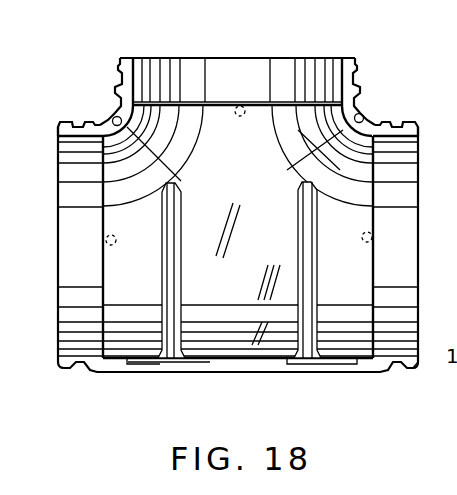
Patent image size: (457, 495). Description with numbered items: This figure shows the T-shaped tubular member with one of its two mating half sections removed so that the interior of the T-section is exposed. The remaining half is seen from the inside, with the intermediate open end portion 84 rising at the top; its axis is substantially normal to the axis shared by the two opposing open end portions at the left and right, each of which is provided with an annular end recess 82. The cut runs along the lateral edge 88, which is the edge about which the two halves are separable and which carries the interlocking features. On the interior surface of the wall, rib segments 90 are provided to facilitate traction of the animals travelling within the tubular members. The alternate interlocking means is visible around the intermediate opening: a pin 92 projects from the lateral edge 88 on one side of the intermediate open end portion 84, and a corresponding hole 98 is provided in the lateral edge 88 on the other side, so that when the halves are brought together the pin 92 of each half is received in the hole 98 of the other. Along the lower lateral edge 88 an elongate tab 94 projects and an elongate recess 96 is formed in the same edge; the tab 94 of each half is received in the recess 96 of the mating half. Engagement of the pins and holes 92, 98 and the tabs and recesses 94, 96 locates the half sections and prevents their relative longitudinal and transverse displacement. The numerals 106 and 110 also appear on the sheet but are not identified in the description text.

The annular end recess 82 is at (117, 90).
The intermediate open end portion 84 is at (333, 44).
The lateral edge 88 is at (112, 108).
The rib segment 90 is at (182, 210).
The pin 92 is at (364, 116).
The elongate tab 94 is at (347, 362).
The elongate recess 96 is at (167, 363).
The hole 98 is at (112, 121).
The connector 106 is at (456, 394).
The wall groove 110 is at (415, 221).